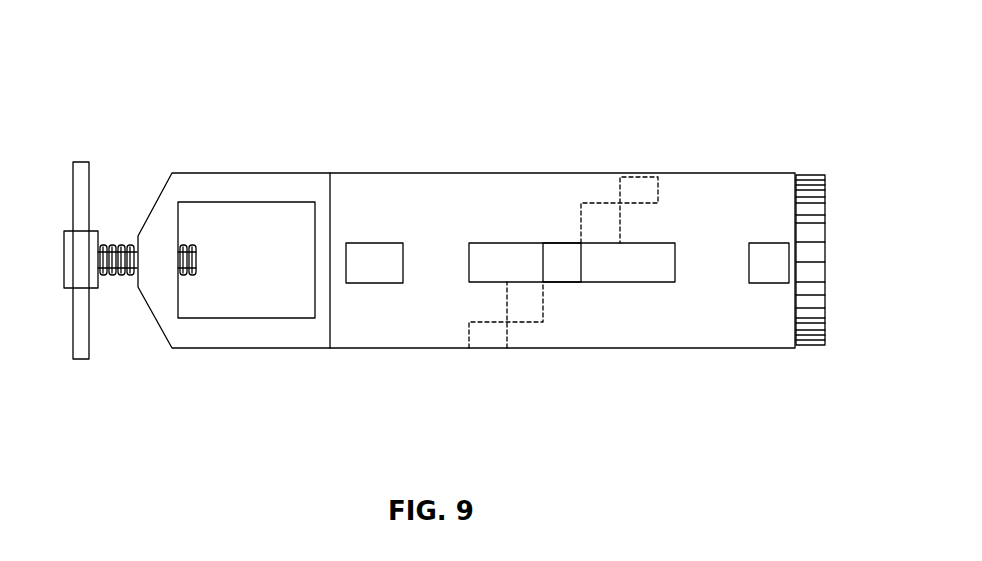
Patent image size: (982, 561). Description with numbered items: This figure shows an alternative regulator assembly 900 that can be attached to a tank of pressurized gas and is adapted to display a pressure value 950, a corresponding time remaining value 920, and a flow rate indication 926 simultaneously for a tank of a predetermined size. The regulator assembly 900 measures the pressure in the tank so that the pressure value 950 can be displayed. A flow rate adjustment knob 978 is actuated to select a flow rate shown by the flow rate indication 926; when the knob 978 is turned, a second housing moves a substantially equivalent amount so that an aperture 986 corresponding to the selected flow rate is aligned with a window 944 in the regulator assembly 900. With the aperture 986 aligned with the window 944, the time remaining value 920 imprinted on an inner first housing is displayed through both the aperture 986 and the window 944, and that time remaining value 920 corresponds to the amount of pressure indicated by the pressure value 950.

The regulator assembly 900 is at (150, 66).
The pressure value 950 is at (382, 243).
The window 944 is at (530, 241).
The time remaining value 920 is at (558, 243).
The flow rate indication 926 is at (763, 243).
The aperture 986 is at (491, 333).
The flow rate adjustment knob 978 is at (812, 346).